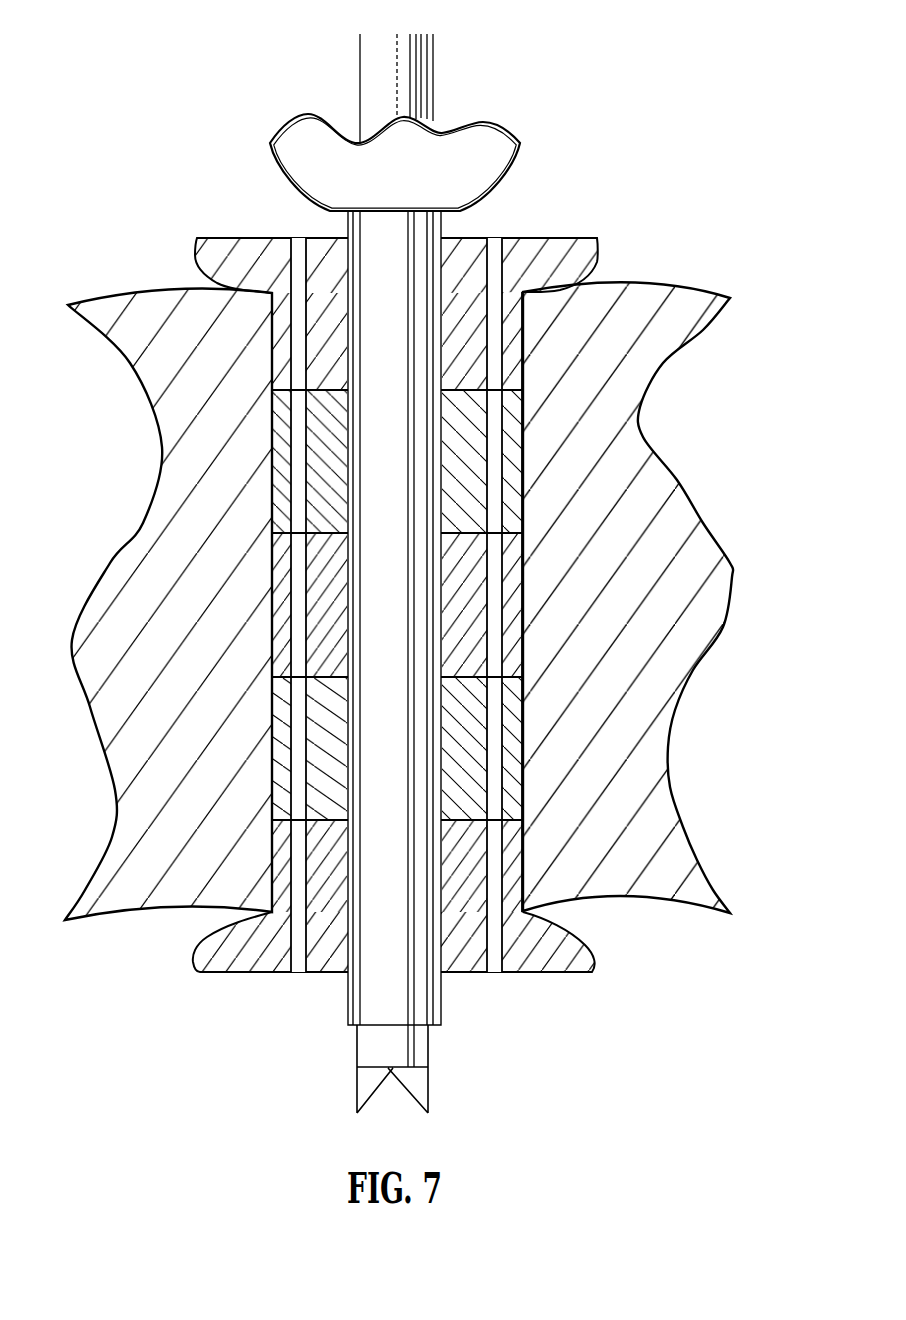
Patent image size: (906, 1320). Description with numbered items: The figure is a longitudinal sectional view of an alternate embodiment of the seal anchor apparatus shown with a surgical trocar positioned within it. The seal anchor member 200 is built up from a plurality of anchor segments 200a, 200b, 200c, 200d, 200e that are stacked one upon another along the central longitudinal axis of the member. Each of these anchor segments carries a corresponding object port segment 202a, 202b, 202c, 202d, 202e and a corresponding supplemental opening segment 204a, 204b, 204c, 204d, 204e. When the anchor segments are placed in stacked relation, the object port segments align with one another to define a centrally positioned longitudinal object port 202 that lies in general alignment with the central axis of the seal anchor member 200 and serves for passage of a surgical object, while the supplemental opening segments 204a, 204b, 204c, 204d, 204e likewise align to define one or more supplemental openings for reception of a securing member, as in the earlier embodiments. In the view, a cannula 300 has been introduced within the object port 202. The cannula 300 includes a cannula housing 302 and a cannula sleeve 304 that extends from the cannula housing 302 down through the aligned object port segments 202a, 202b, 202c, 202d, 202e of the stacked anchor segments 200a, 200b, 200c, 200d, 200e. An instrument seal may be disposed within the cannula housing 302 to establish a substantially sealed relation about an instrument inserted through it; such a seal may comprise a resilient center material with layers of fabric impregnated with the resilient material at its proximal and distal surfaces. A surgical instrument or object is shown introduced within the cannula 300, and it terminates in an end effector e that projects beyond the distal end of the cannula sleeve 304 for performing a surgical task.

The cannula 300 is at (454, 573).
The cannula housing 302 is at (406, 183).
The cannula sleeve 304 is at (410, 793).
The seal anchor member 200 is at (590, 316).
The anchor segment 200a is at (460, 273).
The anchor segment 200b is at (327, 463).
The anchor segment 200c is at (322, 618).
The anchor segment 200d is at (322, 762).
The anchor segment 200e is at (323, 928).
The object port 202 is at (416, 607).
The object port segment 202a is at (350, 257).
The object port segment 202b is at (343, 415).
The object port segment 202c is at (347, 555).
The object port segment 202d is at (442, 733).
The object port segment 202e is at (437, 933).
The supplemental opening segment 204a is at (493, 280).
The supplemental opening segment 204b is at (493, 438).
The supplemental opening segment 204c is at (497, 648).
The supplemental opening segment 204d is at (492, 768).
The supplemental opening segment 204e is at (495, 915).
The end effector e is at (418, 1078).